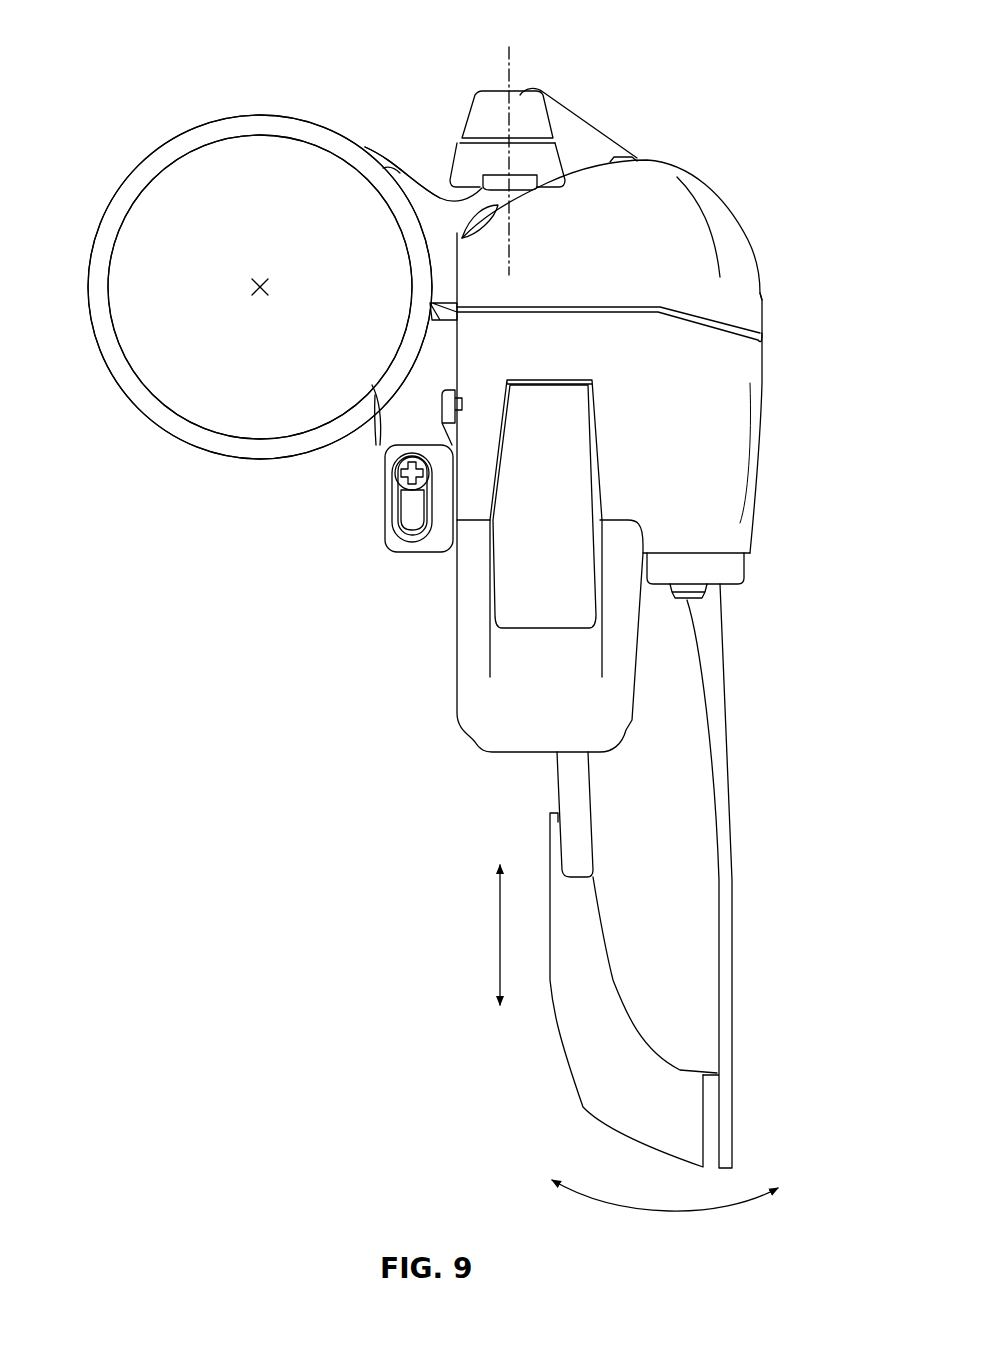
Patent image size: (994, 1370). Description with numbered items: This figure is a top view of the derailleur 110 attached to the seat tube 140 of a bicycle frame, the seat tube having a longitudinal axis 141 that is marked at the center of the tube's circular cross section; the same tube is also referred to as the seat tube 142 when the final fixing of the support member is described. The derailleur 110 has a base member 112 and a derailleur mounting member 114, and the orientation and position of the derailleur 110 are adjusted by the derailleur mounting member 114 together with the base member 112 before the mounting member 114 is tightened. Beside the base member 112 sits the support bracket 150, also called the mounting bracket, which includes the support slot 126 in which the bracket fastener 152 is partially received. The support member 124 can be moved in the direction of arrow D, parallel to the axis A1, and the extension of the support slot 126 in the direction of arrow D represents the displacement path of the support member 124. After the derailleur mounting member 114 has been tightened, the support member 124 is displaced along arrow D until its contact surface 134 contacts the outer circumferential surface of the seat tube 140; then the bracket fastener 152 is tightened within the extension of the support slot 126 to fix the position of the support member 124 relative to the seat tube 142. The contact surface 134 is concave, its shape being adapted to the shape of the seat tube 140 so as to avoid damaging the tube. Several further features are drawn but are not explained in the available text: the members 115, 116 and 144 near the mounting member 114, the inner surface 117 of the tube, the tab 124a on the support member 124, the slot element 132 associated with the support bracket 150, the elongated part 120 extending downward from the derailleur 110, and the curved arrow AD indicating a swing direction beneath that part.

The derailleur 110 is at (712, 122).
The base member 112 is at (625, 457).
The derailleur mounting member 114 is at (490, 103).
The mounting arm assembly 115 is at (432, 128).
The opening 116 is at (547, 168).
The inner surface of ring 117 is at (290, 455).
The handle 120 is at (723, 997).
The support member 124 is at (387, 413).
The clamp tab 124a is at (453, 348).
The support slot 126 is at (407, 513).
The slot 132 is at (453, 492).
The contact surface 134 is at (390, 385).
The seat tube 140 is at (130, 393).
The longitudinal axis 141 is at (252, 291).
The seat tube 142 is at (112, 168).
The connecting arm 144 is at (397, 173).
The support bracket 150 is at (448, 542).
The bracket fastener 152 is at (398, 465).
The axis A1 is at (512, 75).
The arrow D is at (497, 935).
The angular direction AD is at (687, 1217).